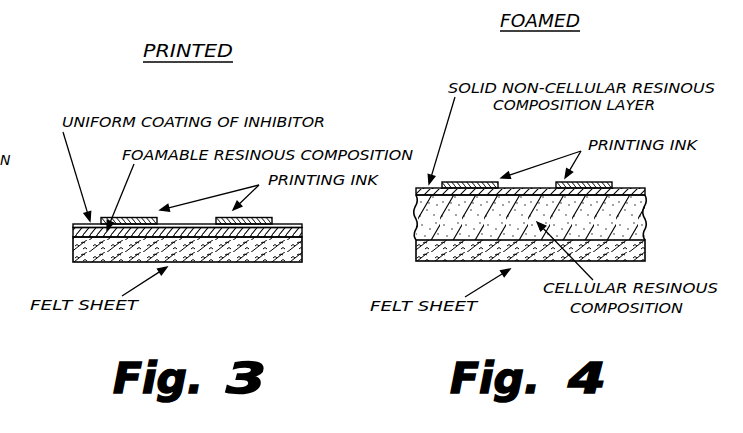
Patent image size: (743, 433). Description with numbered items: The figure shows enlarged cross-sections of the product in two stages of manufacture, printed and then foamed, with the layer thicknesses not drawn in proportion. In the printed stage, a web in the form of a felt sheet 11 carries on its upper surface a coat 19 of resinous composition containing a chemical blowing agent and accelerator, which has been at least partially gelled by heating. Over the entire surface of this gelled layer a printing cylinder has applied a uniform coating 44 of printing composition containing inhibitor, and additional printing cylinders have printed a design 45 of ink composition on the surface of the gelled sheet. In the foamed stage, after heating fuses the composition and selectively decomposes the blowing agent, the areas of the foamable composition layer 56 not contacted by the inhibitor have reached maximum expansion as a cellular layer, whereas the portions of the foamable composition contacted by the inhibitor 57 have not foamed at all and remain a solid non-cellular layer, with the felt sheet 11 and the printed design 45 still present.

In FIG. 3, the felt sheet 11 is at (262, 255).
In FIG. 4, the felt sheet 11 is at (426, 259).
In FIG. 3, the coat of resinous composition 19 is at (73, 231).
In FIG. 3, the uniform coating of printing composition 44 is at (302, 226).
In FIG. 3, the design 45 is at (266, 217).
In FIG. 4, the design 45 is at (609, 182).
In FIG. 4, the foamable composition layer 56 is at (648, 222).
In FIG. 4, the portions of foamable composition contacted by the inhibitor 57 is at (647, 190).